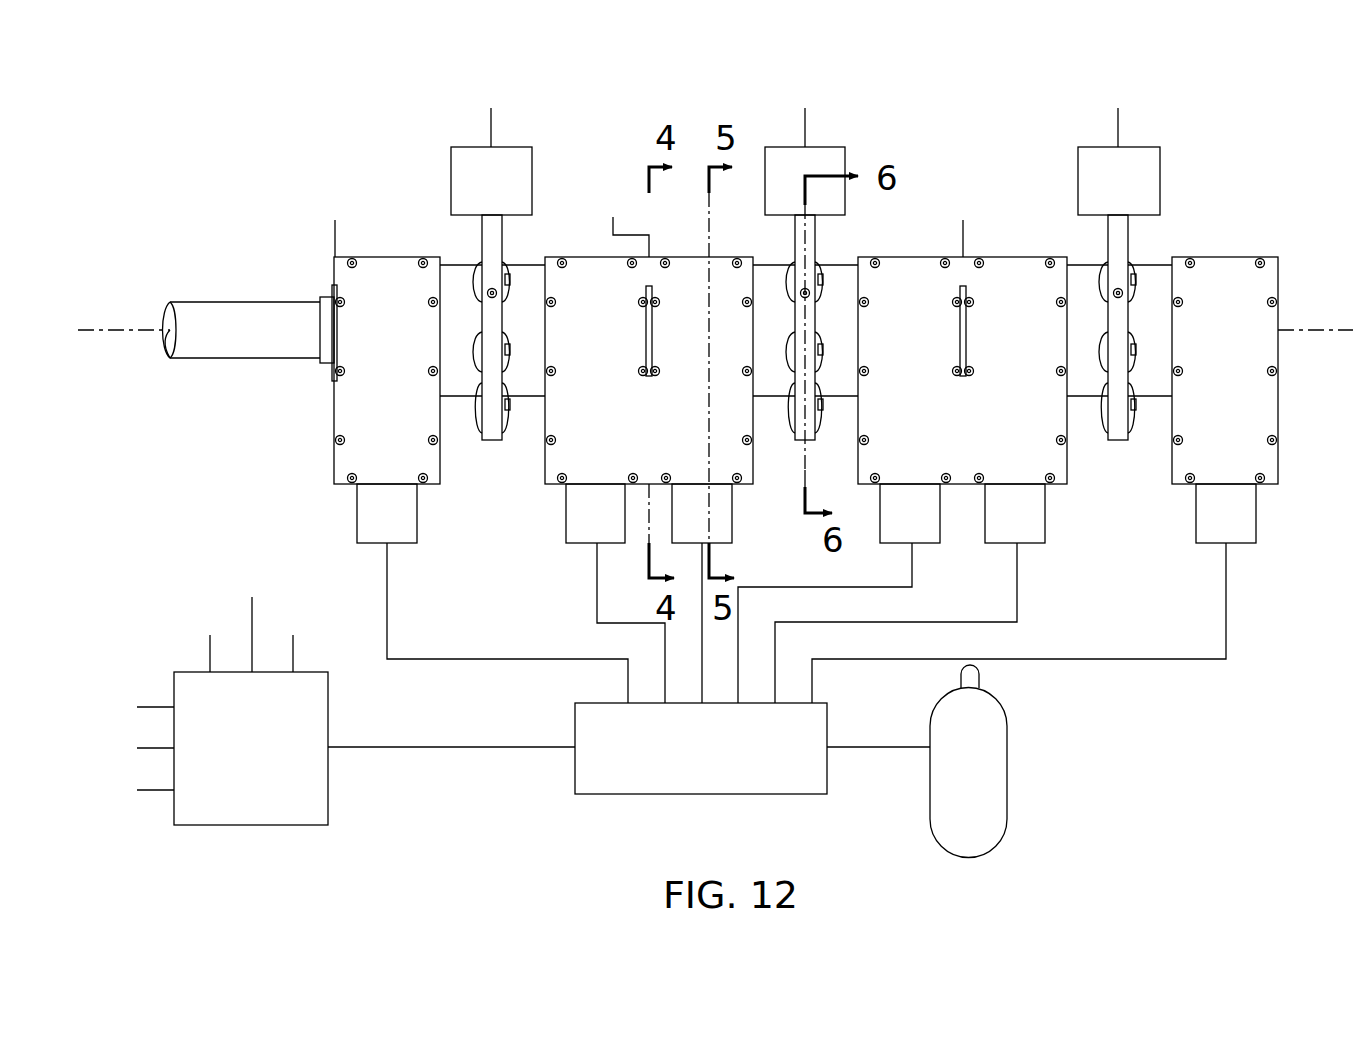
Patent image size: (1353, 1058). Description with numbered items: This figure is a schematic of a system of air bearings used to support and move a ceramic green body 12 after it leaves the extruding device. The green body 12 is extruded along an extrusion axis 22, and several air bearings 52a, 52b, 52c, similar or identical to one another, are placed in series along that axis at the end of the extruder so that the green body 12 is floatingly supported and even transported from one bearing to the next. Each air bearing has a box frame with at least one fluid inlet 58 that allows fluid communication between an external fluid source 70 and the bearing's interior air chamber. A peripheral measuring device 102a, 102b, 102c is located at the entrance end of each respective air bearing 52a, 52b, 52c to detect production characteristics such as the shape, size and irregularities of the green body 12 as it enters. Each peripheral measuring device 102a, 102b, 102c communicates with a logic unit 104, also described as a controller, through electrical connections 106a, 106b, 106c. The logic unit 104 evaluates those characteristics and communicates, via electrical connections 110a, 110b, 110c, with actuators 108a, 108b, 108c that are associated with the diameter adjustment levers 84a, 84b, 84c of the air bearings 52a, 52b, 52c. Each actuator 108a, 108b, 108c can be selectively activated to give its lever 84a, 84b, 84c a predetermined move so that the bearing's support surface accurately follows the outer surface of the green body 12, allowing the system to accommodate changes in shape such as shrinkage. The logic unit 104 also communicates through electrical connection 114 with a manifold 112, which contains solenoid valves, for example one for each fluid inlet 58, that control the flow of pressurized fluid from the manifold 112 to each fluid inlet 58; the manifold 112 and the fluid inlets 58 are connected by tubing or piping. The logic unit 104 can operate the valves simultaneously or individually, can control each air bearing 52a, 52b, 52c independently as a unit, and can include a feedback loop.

The green body 12 is at (238, 302).
The extrusion axis 22 is at (108, 328).
The air bearing 52a is at (580, 257).
The air bearing 52b is at (930, 257).
The air bearing 52c is at (1222, 257).
The fluid inlet 58 is at (357, 520).
The fluid source 70 is at (1007, 762).
The diameter adjustment lever 84a is at (482, 230).
The diameter adjustment lever 84b is at (815, 226).
The diameter adjustment lever 84c is at (1128, 226).
The peripheral measuring device 102a is at (332, 372).
The peripheral measuring device 102b is at (646, 336).
The peripheral measuring device 102c is at (960, 336).
The logic unit 104 is at (250, 825).
The electrical connection 106a is at (348, 220).
The electrical connection 106b is at (626, 217).
The electrical connection 106c is at (976, 220).
The actuator 108a is at (532, 158).
The actuator 108b is at (845, 158).
The actuator 108c is at (1160, 158).
The electrical connection 110a is at (504, 108).
The electrical connection 110b is at (818, 108).
The electrical connection 110c is at (1131, 108).
The manifold 112 is at (765, 795).
The electrical connection 114 is at (480, 750).